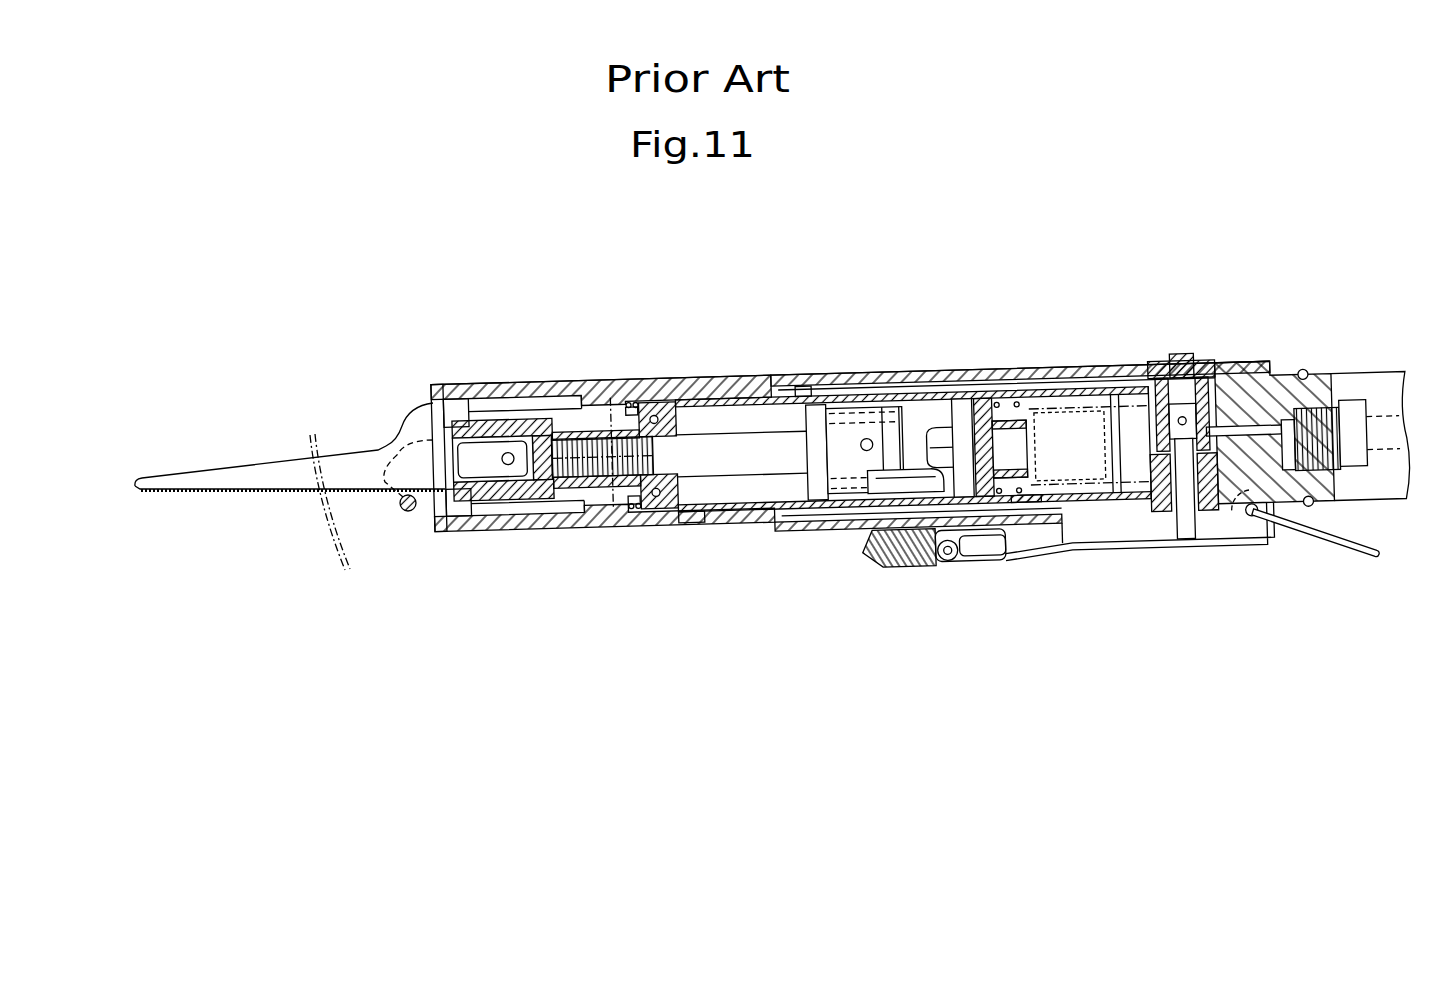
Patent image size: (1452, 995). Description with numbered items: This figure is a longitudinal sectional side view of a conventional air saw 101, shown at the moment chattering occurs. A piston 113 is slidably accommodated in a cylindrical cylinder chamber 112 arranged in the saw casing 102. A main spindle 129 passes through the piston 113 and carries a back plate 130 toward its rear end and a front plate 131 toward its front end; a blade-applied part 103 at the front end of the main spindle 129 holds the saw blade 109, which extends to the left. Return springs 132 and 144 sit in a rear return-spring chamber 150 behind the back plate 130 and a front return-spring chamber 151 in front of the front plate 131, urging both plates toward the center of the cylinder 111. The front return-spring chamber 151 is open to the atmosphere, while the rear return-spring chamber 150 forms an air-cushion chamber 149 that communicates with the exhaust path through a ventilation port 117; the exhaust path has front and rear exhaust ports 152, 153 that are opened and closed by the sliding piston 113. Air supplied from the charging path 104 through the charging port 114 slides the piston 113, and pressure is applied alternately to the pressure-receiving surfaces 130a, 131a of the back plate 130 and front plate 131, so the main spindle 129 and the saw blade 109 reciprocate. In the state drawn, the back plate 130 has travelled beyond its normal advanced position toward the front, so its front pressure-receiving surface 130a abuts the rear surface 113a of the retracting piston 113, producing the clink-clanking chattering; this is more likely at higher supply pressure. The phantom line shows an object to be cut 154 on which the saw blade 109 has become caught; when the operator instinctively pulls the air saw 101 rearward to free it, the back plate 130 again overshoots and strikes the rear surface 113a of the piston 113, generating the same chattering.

The air saw 101 is at (944, 309).
The saw casing 102 is at (1080, 377).
The blade-applied part 103 is at (485, 381).
The charging path 104 is at (903, 537).
The saw blade 109 is at (263, 489).
The cylinder 111 is at (1053, 387).
The cylinder chamber 112 is at (723, 424).
The piston 113 is at (848, 443).
The rear surface of the piston 113a is at (987, 393).
The charging port 114 is at (877, 507).
The ventilation port 117 is at (1093, 393).
The main spindle 129 is at (763, 452).
The back plate 130 is at (984, 500).
The pressure-receiving surface of the back plate 130a is at (970, 397).
The front plate 131 is at (668, 396).
The pressure-receiving surface of the front plate 131a is at (697, 520).
The return spring 132 is at (1030, 507).
The return spring 144 is at (610, 398).
The air-cushion chamber 149 is at (1094, 466).
The rear return-spring chamber 150 is at (1063, 463).
The front return-spring chamber 151 is at (633, 398).
The front exhaust port 152 is at (803, 393).
The rear exhaust port 153 is at (945, 393).
The object to be cut 154 is at (323, 527).